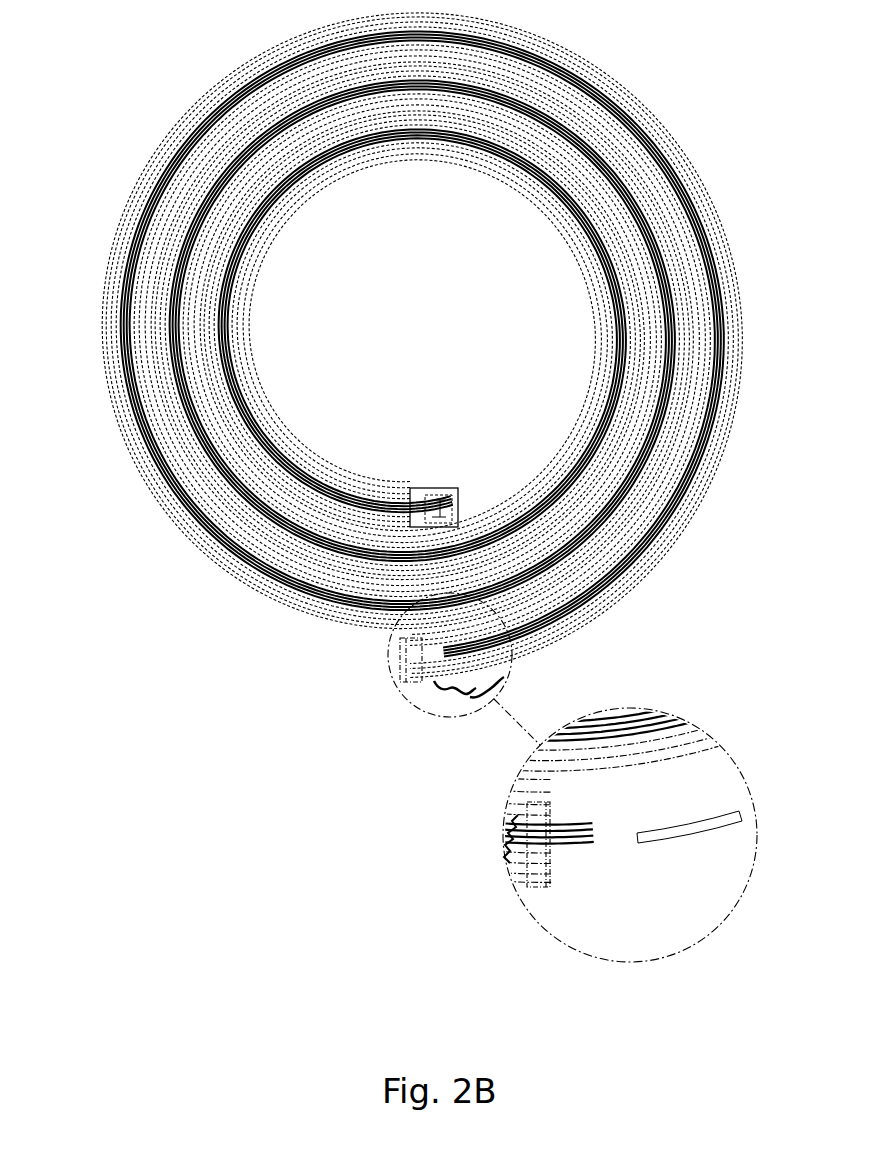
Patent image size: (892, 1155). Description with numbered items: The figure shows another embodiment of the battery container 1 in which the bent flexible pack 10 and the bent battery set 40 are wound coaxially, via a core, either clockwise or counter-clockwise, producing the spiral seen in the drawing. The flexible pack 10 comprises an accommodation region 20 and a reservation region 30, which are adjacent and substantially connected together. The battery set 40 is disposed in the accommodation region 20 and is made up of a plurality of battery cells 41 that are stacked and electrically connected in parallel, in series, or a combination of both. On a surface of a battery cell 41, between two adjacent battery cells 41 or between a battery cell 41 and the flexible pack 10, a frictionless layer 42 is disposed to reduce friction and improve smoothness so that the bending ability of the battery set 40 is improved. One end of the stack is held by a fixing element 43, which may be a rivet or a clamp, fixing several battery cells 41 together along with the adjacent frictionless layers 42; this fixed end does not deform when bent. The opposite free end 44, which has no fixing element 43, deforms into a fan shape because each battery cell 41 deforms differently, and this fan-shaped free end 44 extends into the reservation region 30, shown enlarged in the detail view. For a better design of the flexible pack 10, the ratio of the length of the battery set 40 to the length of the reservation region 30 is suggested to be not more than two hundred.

The battery container 1 is at (176, 81).
The flexible pack 10 is at (642, 108).
The accommodation region 20 is at (690, 188).
The reservation region 30 is at (415, 660).
The battery set 40 is at (566, 800).
The battery cells 41 is at (713, 833).
The frictionless layer 42 is at (667, 838).
The fixing element 43 is at (430, 527).
The free end 44 is at (469, 710).